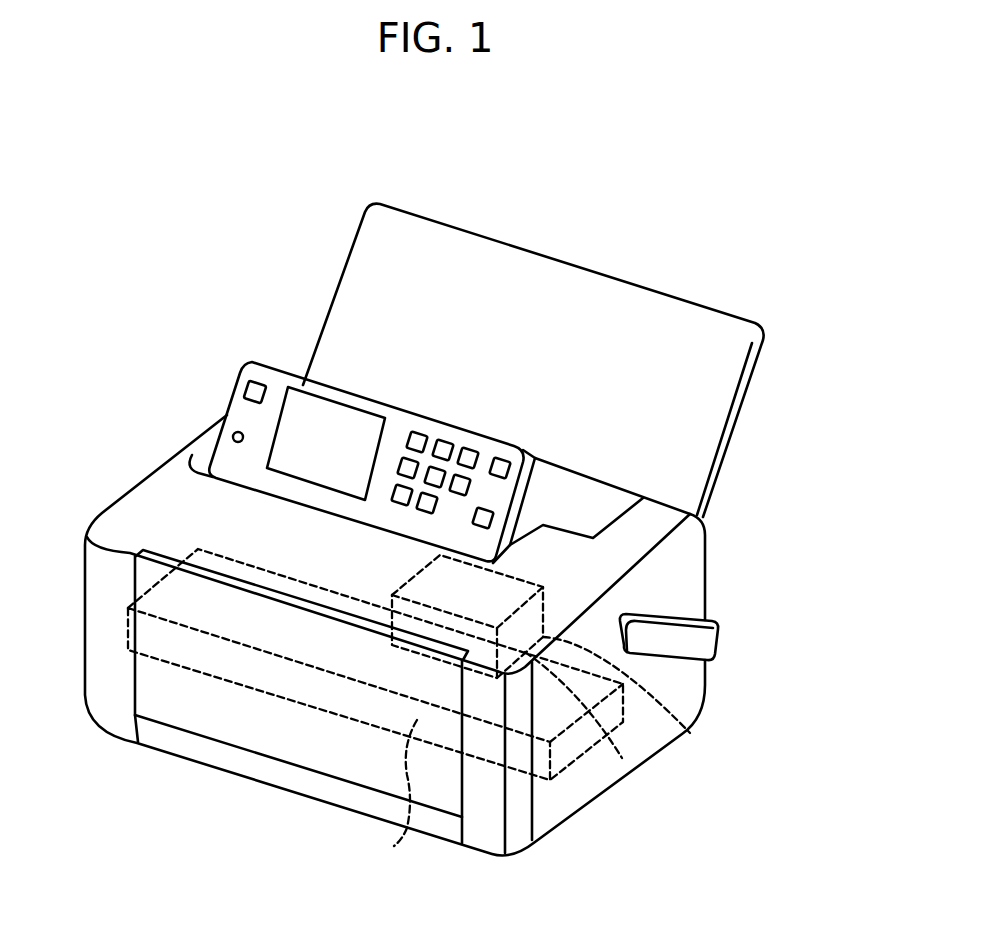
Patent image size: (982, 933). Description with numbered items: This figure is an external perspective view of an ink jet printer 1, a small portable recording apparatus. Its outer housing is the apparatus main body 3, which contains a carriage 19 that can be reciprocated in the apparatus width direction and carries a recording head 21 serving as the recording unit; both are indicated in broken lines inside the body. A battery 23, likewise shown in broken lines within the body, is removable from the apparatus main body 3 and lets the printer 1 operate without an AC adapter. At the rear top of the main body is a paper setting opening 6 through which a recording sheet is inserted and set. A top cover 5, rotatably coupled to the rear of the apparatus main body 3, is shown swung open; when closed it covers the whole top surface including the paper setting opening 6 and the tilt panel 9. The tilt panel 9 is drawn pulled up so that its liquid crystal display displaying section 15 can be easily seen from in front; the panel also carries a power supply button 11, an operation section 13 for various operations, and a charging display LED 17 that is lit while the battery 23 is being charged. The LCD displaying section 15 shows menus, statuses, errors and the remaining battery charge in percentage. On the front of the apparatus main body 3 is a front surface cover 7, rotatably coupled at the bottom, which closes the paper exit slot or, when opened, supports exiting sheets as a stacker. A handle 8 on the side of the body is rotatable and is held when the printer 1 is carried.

The printer 1 is at (723, 238).
The apparatus main body 3 is at (678, 675).
The top cover 5 is at (580, 286).
The paper setting opening 6 is at (592, 508).
The front surface cover 7 is at (198, 703).
The handle 8 is at (678, 632).
The tilt panel 9 is at (270, 365).
The power supply button 11 is at (247, 383).
The operation section 13 is at (460, 432).
The liquid crystal display displaying section 15 is at (337, 413).
The charging display LED 17 is at (233, 436).
The carriage 19 is at (690, 733).
The recording head 21 is at (622, 758).
The battery 23 is at (394, 846).